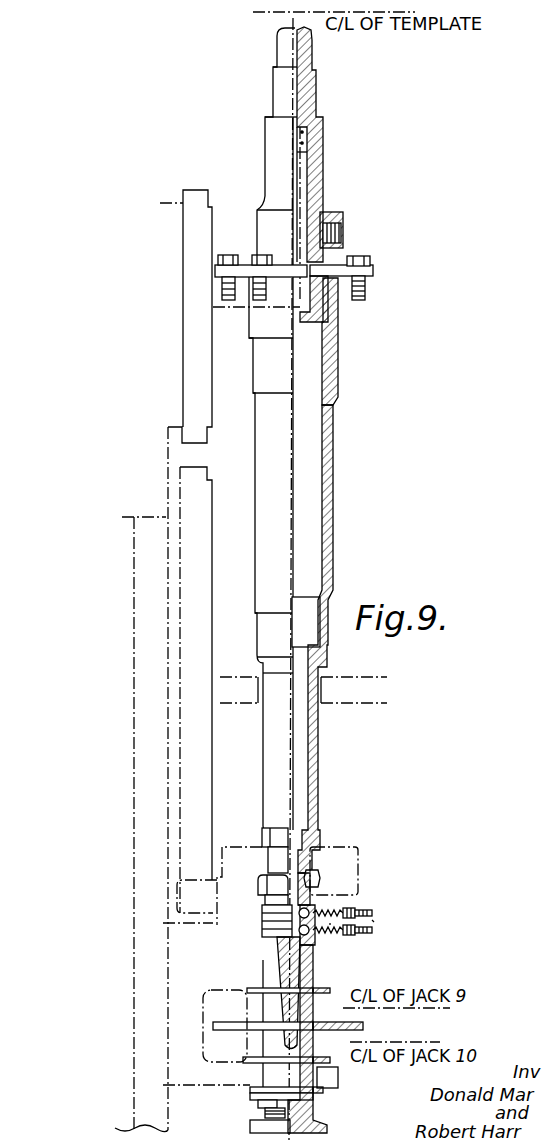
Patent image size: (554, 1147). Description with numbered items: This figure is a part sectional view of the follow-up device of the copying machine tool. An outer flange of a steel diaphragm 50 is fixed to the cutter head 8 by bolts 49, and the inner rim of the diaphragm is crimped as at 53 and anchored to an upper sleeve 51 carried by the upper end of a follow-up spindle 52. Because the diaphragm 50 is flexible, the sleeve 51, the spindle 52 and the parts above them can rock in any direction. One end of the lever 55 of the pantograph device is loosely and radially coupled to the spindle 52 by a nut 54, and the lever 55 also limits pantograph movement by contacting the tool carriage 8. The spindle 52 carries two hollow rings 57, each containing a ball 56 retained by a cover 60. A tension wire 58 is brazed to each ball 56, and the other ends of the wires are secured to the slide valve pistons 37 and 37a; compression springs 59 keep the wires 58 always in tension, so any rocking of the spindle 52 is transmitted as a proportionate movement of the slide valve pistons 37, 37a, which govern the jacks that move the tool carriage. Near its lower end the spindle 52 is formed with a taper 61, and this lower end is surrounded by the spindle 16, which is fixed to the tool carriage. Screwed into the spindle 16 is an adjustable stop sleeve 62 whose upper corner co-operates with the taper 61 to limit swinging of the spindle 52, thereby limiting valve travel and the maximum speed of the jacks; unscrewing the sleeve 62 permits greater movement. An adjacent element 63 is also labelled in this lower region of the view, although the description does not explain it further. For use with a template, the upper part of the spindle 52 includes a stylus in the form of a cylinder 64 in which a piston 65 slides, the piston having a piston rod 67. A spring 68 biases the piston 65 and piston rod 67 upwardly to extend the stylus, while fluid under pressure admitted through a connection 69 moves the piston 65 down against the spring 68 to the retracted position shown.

The cutter head 8 is at (213, 381).
The spindle 16 is at (314, 1040).
The slide valve piston 37 is at (345, 935).
The slide valve piston 37a is at (374, 922).
The bolts 49 is at (262, 255).
The steel diaphragm 50 is at (343, 283).
The upper sleeve 51 is at (338, 332).
The follow-up spindle 52 is at (330, 463).
The crimped inner rim 53 is at (328, 283).
The nut 54 is at (312, 880).
The lever 55 is at (248, 852).
The ball 56 is at (360, 882).
The hollow rings 57 is at (312, 940).
The tension wire 58 is at (347, 908).
The compression springs 59 is at (372, 926).
The cover 60 is at (335, 850).
The taper 61 is at (263, 968).
The sleeve 62 is at (289, 1012).
The arm plate 63 is at (258, 1027).
The cylinder 64 is at (308, 143).
The piston 65 is at (315, 262).
The piston rod 67 is at (313, 97).
The spring 68 is at (303, 152).
The connection 69 is at (345, 228).